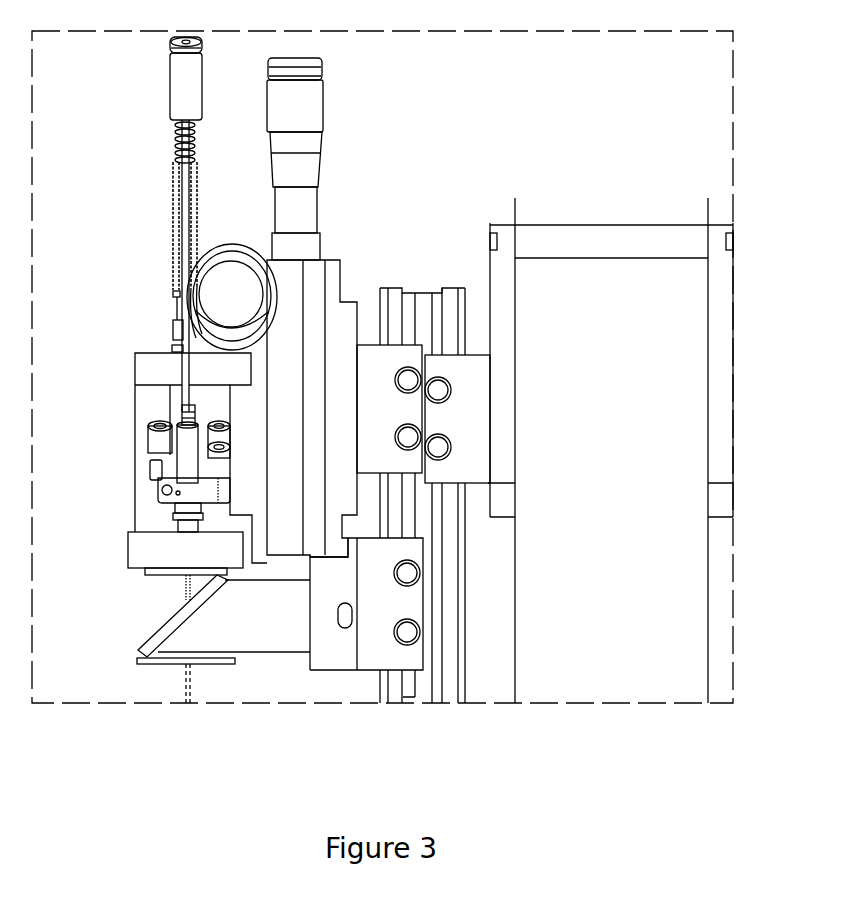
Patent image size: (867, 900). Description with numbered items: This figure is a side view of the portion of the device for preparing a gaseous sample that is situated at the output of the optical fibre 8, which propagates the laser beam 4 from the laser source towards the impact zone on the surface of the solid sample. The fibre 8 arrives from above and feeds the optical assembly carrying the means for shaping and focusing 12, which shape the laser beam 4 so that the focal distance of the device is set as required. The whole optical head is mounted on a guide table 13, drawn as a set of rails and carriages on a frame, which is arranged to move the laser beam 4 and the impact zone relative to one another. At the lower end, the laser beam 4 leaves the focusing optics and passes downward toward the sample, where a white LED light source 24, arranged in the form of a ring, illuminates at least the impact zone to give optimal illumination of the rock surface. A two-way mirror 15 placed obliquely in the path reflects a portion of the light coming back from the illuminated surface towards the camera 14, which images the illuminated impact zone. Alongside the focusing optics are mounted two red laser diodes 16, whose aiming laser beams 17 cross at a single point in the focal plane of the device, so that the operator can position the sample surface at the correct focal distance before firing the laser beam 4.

The optical fibre 8 is at (175, 207).
The guide table 13 is at (315, 317).
The red laser diodes 16 is at (190, 453).
The means for shaping and focusing 12 is at (137, 502).
The laser beam 4 is at (183, 588).
The two-way mirror 15 is at (146, 632).
The white LED light source 24 is at (163, 664).
The aiming laser beams 17 is at (190, 683).
The camera 14 is at (270, 627).